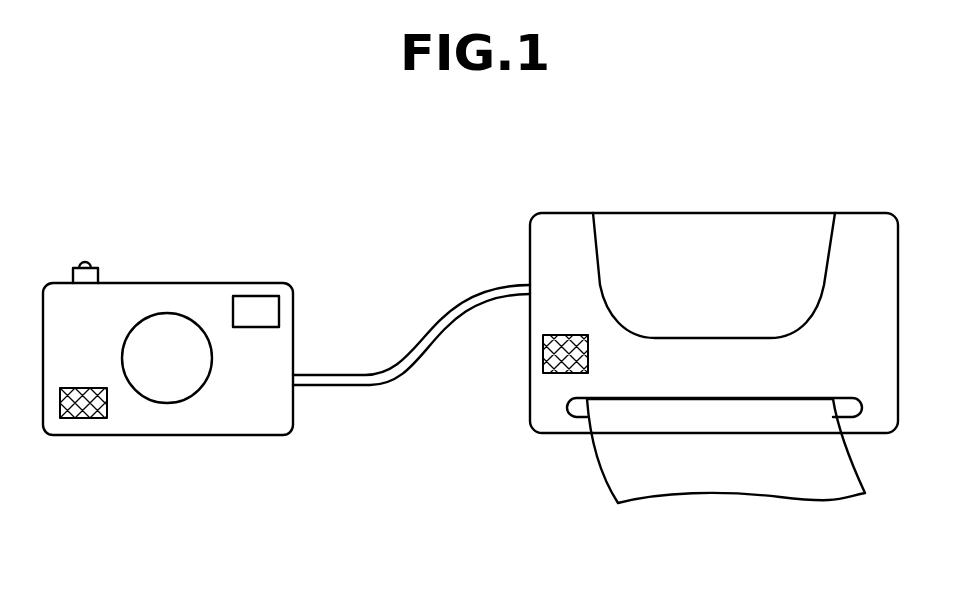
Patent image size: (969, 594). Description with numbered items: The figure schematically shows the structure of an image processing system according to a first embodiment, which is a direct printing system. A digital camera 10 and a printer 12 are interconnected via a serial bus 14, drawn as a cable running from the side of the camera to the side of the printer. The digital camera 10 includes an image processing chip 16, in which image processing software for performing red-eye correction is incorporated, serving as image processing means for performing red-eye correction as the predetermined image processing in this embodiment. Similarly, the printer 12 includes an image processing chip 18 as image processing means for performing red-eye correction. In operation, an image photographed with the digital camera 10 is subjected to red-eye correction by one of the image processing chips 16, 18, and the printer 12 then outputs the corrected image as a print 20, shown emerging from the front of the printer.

The digital camera 10 is at (155, 286).
The printer 12 is at (565, 216).
The serial bus 14 is at (408, 370).
The image processing chip 16 is at (92, 418).
The image processing chip 18 is at (543, 363).
The print 20 is at (785, 488).